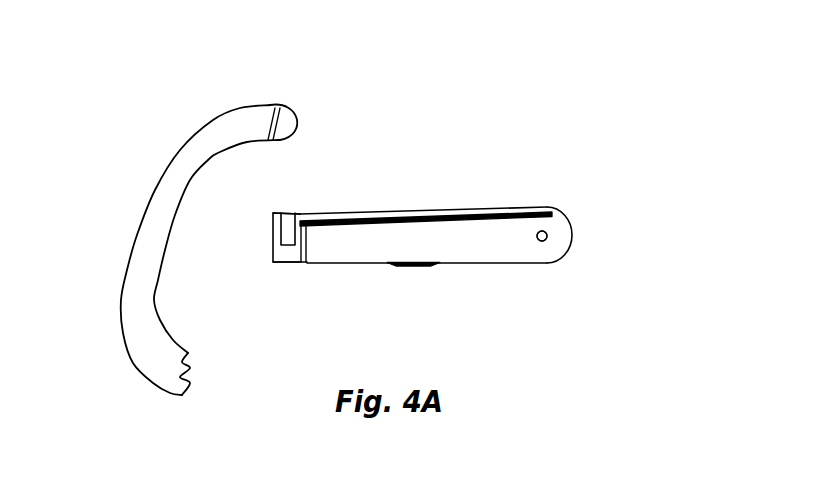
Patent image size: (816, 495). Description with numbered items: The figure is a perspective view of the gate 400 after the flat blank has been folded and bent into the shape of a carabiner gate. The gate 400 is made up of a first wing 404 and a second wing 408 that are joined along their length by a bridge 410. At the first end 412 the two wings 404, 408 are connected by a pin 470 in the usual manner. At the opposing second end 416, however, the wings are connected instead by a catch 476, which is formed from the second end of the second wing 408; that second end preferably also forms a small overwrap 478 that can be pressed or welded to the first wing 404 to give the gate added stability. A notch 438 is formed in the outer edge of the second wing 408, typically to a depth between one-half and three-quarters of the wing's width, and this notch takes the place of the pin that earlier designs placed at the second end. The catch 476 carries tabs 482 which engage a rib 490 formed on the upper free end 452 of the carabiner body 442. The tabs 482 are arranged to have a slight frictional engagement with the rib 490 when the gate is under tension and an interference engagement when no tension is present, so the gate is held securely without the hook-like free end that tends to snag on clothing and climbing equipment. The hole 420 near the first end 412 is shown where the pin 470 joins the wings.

The gate 400 is at (453, 122).
The first wing 404 is at (472, 238).
The second wing 408 is at (363, 210).
The bridge 410 is at (405, 267).
The first end 412 is at (572, 245).
The second end 416 is at (256, 242).
The pivot hole 420 is at (548, 233).
The notch 438 is at (285, 222).
The carabiner body 442 is at (137, 213).
The upper free end 452 is at (257, 105).
The pin 470 is at (542, 231).
The catch 476 is at (270, 258).
The overwrap 478 is at (307, 267).
The tabs 482 is at (273, 217).
The rib 490 is at (290, 105).